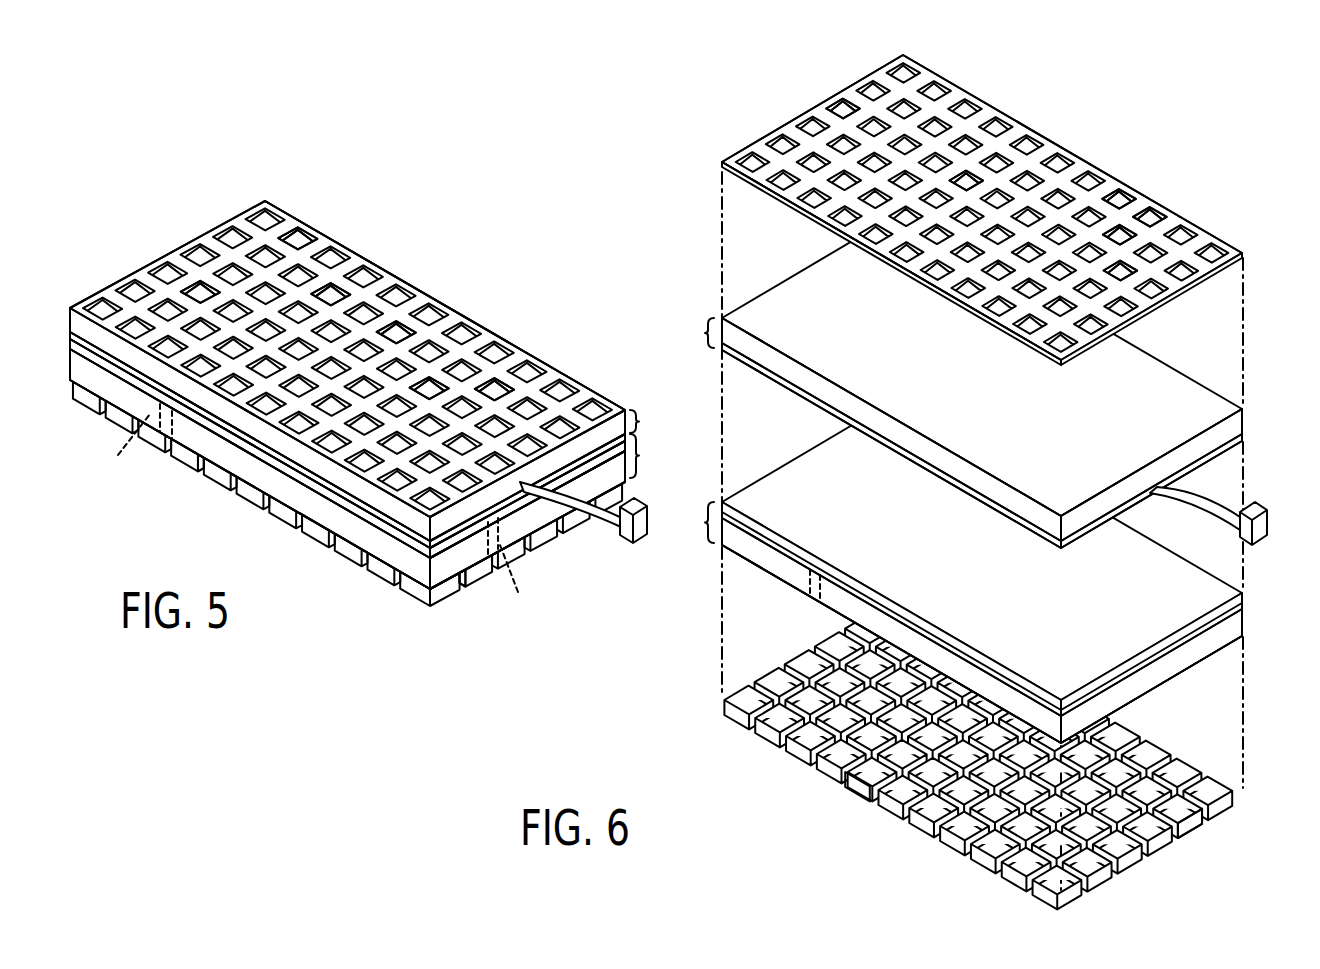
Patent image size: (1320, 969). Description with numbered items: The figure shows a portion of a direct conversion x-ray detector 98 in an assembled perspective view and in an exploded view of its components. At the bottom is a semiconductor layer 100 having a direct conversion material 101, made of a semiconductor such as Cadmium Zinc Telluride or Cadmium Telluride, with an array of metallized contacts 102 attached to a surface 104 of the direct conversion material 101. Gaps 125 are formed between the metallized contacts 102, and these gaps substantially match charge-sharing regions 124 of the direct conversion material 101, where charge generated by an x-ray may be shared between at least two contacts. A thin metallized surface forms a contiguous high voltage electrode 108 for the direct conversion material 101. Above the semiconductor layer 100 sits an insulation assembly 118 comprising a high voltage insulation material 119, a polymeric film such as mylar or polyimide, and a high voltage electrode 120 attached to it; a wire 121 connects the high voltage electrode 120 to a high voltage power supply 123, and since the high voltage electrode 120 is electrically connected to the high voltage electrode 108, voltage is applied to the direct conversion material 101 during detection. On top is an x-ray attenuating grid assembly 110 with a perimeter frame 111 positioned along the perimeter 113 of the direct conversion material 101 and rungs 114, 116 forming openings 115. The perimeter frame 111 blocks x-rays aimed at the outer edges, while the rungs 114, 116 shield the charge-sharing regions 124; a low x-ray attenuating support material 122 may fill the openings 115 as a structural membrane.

In FIG. 5, the x-ray detector 98 is at (145, 188).
In FIG. 6, the x-ray detector 98 is at (1108, 118).
In FIG. 5, the semiconductor layer 100 is at (370, 484).
In FIG. 6, the semiconductor layer 100 is at (956, 569).
In FIG. 5, the direct conversion material 101 is at (493, 548).
In FIG. 6, the direct conversion material 101 is at (763, 552).
In FIG. 5, the metallized contacts 102 is at (282, 520).
In FIG. 6, the metallized contacts 102 is at (728, 715).
In FIG. 5, the surface 104 is at (383, 563).
In FIG. 6, the surface 104 is at (1175, 678).
In FIG. 5, the high voltage electrode 108 is at (578, 470).
In FIG. 6, the high voltage electrode 108 is at (1218, 611).
In FIG. 5, the grid assembly 110 is at (592, 386).
In FIG. 6, the grid assembly 110 is at (963, 100).
In FIG. 5, the perimeter frame 111 is at (380, 262).
In FIG. 6, the perimeter frame 111 is at (753, 181).
In FIG. 5, the perimeter 113 is at (620, 468).
In FIG. 6, the perimeter 113 is at (1208, 643).
In FIG. 5, the rungs 114 is at (190, 297).
In FIG. 6, the rungs 114 is at (953, 187).
In FIG. 5, the openings 115 is at (336, 290).
In FIG. 6, the openings 115 is at (842, 108).
In FIG. 5, the rungs 116 is at (442, 393).
In FIG. 6, the rungs 116 is at (1135, 278).
In FIG. 5, the insulation assembly 118 is at (369, 445).
In FIG. 6, the insulation assembly 118 is at (956, 379).
In FIG. 5, the high voltage insulation material 119 is at (100, 345).
In FIG. 6, the high voltage insulation material 119 is at (768, 313).
In FIG. 5, the high voltage electrode 120 is at (97, 355).
In FIG. 6, the high voltage electrode 120 is at (755, 362).
In FIG. 5, the wire 121 is at (613, 530).
In FIG. 6, the wire 121 is at (1183, 500).
In FIG. 5, the support material 122 is at (302, 233).
In FIG. 6, the support material 122 is at (1150, 213).
In FIG. 5, the high voltage power supply 123 is at (635, 543).
In FIG. 6, the high voltage power supply 123 is at (1250, 508).
In FIG. 5, the charge-sharing regions 124 is at (318, 511).
In FIG. 6, the charge-sharing regions 124 is at (813, 582).
In FIG. 5, the gaps 125 is at (200, 470).
In FIG. 6, the gaps 125 is at (845, 783).